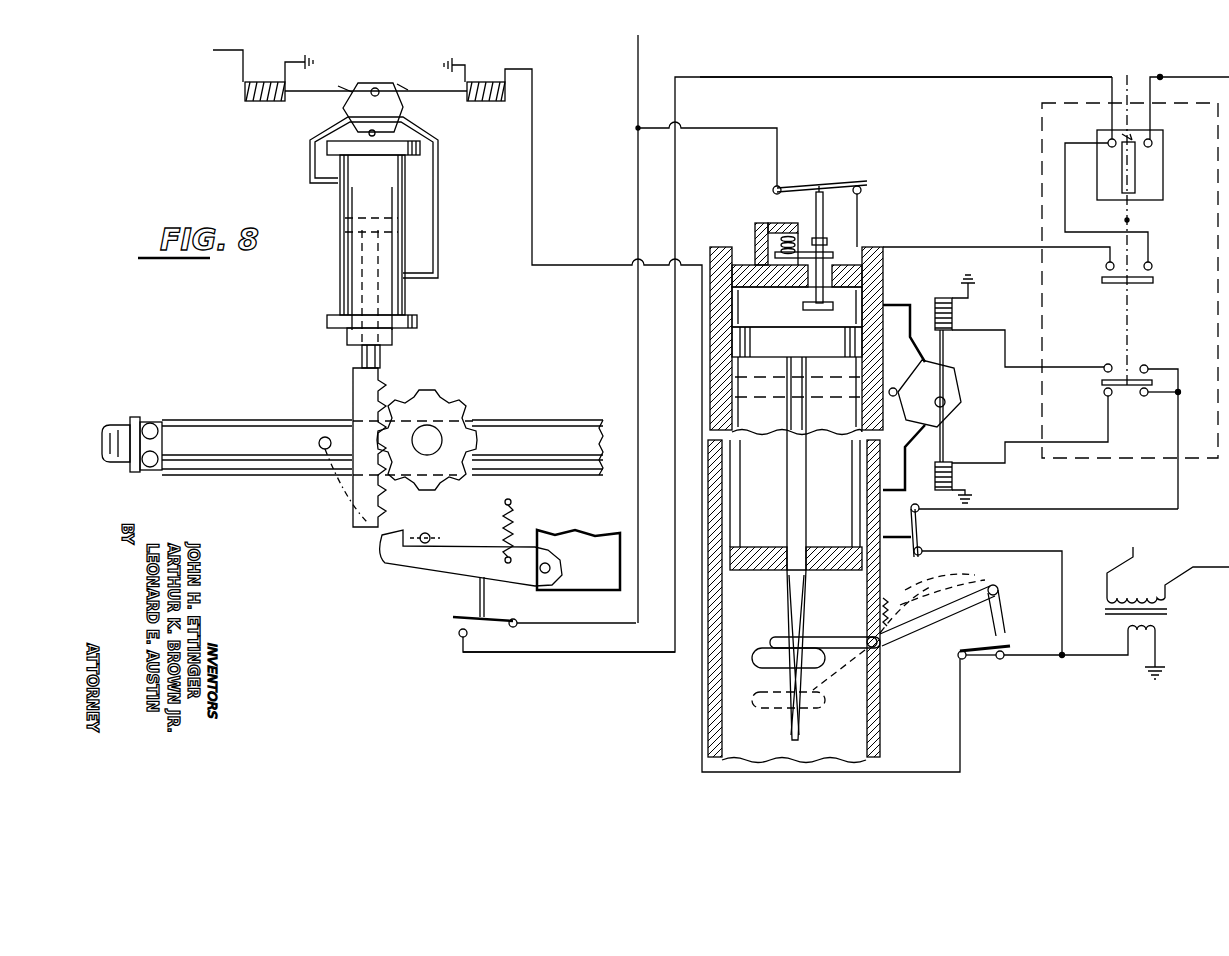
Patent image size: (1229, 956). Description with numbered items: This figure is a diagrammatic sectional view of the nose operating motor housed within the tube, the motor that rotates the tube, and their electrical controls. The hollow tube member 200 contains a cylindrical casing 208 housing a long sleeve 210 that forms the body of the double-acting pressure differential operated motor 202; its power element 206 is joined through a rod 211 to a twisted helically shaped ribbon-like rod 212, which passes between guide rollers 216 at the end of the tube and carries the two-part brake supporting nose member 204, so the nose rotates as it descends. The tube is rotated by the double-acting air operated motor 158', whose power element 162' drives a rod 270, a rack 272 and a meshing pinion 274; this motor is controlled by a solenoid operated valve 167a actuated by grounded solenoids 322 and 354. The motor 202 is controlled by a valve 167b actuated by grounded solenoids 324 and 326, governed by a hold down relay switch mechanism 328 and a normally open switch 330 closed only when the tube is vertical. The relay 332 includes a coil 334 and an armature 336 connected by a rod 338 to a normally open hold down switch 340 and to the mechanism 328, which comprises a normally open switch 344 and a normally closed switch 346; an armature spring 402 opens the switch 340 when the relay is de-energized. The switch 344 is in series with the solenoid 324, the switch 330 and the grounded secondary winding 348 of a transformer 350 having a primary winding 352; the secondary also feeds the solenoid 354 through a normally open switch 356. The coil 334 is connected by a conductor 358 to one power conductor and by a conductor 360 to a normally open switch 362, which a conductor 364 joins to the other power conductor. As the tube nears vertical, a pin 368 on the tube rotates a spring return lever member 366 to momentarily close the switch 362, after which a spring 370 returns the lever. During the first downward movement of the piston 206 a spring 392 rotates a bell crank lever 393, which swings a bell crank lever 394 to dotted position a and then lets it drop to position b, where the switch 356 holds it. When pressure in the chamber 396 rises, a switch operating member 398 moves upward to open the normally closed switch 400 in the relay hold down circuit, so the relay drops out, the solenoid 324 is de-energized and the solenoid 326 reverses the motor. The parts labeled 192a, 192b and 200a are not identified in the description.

The double-acting air operated motor 158' is at (359, 231).
The power element 162' is at (420, 266).
The solenoid operated valve 167a is at (360, 100).
The valve body 192a is at (387, 118).
The grounded solenoid 322 is at (247, 102).
The grounded solenoid 354 is at (483, 83).
The two-part brake supporting nose member 204 is at (107, 427).
The twisted helically shaped ribbon-like rod 212 is at (145, 433).
The guide rollers 216 is at (155, 453).
The rod 200a is at (265, 420).
The rod 270 is at (365, 357).
The rack 272 is at (370, 382).
The pinion 274 is at (445, 402).
The pin 368 is at (323, 447).
The spring return lever member 366 is at (418, 560).
The spring 370 is at (506, 522).
The normally open switch 362 is at (458, 624).
The conductor 360 is at (898, 77).
The conductor 364 is at (638, 200).
The chamber 396 is at (753, 300).
The pressure differential and spring operated switch operating member 398 is at (820, 273).
The double-acting pressure differential operated motor 202 is at (885, 285).
The normally closed switch 400 is at (850, 180).
The power element 206 is at (753, 338).
The rod 211 is at (792, 463).
The sleeve 210 is at (728, 520).
The cylindrical casing 208 is at (712, 683).
The hollow tube member 200 is at (880, 732).
The spring 392 is at (887, 605).
The bell crank lever 393 is at (883, 644).
The bell crank lever 394 is at (995, 585).
The normally open switch 356 is at (1000, 637).
The normally open switch 330 is at (917, 527).
The grounded solenoid 324 is at (952, 310).
The grounded solenoid 326 is at (952, 482).
The valve body 192b is at (927, 362).
The valve 167b is at (947, 392).
The hold down relay switch mechanism 328 is at (1110, 355).
The normally open switch 344 is at (1135, 368).
The normally closed switch 346 is at (1132, 387).
The relay 332 is at (1046, 179).
The coil 334 is at (1153, 167).
The armature 336 is at (1132, 177).
The rod 338 is at (1129, 221).
The normally open hold down switch 340 is at (1140, 287).
The armature spring 402 is at (1127, 75).
The conductor 358 is at (1160, 77).
The primary winding 352 is at (1137, 592).
The transformer 350 is at (1170, 610).
The grounded secondary winding 348 is at (1143, 645).
The dotted line position A a is at (955, 580).
The position B b is at (915, 622).